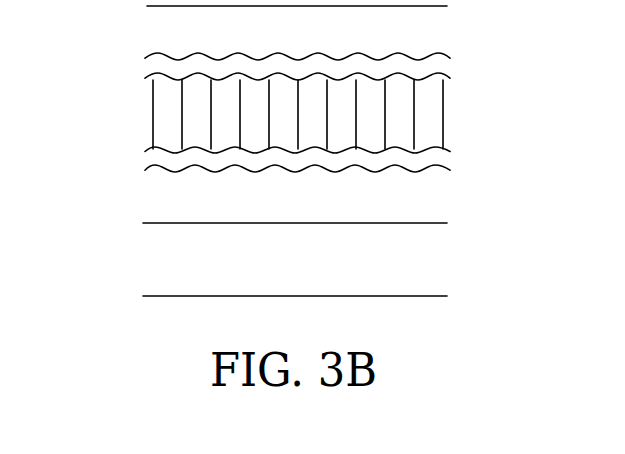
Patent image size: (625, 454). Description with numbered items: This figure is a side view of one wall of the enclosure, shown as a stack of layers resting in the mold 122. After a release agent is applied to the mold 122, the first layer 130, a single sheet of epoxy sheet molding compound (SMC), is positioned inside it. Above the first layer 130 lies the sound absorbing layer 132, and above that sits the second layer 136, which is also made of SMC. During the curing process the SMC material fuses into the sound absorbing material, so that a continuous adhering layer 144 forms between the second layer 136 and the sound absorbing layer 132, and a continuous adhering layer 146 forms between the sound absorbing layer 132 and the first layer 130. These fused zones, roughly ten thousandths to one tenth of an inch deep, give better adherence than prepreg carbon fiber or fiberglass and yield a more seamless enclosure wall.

The second layer 136 is at (165, 34).
The continuous adhering layer 144 is at (450, 66).
The sound absorbing layer 132 is at (433, 118).
The continuous adhering layer 146 is at (450, 162).
The first layer 130 is at (440, 205).
The mold 122 is at (435, 270).